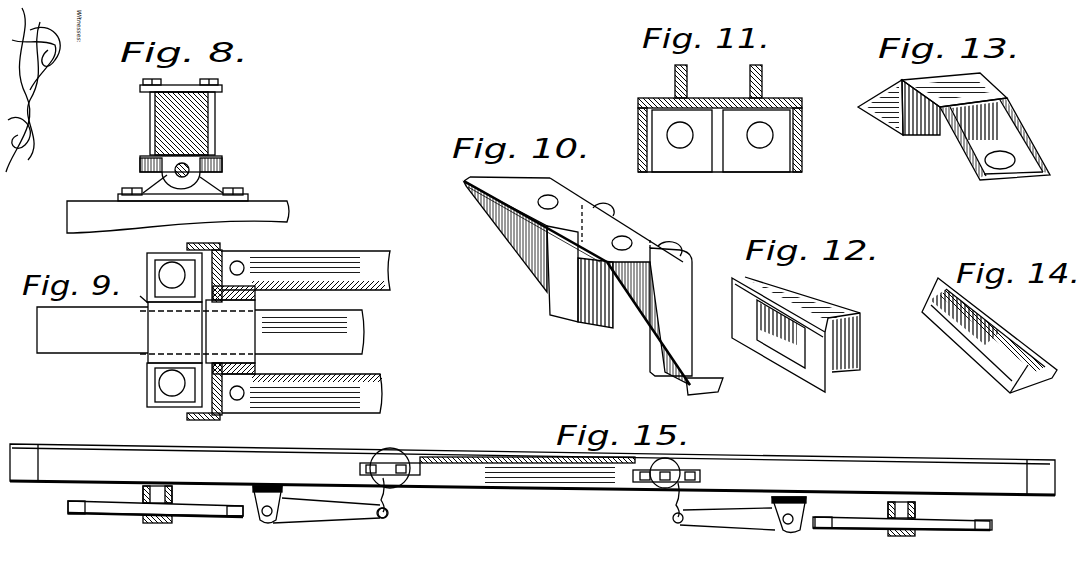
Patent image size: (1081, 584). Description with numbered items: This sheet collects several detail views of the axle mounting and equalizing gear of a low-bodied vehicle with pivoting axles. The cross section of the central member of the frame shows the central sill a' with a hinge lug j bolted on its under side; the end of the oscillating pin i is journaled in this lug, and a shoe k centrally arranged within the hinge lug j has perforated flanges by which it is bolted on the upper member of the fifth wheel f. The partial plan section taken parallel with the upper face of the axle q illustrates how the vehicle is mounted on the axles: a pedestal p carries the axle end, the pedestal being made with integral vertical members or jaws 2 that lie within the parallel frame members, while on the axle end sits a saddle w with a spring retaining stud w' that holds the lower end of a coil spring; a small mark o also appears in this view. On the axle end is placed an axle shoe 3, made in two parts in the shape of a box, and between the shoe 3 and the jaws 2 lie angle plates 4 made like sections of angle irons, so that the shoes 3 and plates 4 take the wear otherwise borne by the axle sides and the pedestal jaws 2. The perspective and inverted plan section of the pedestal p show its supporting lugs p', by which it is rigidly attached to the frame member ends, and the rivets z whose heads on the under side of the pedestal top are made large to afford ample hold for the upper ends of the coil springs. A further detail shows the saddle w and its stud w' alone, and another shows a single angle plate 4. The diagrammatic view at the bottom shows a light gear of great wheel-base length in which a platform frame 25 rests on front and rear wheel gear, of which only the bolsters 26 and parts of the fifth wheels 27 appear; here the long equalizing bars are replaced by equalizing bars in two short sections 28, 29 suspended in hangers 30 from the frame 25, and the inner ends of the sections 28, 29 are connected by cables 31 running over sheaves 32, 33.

In FIG. 8, the central sill a' is at (191, 125).
In FIG. 9, the central sill a' is at (316, 393).
In FIG. 8, the hinge lugs j is at (219, 164).
In FIG. 8, the oscillating pin i is at (166, 173).
In FIG. 8, the shoes k is at (201, 183).
In FIG. 8, the fifth wheel f is at (165, 219).
In FIG. 9, the axle q is at (92, 344).
In FIG. 9, the spring retaining studs w' is at (174, 336).
In FIG. 13, the spring retaining studs w' is at (996, 182).
In FIG. 9, the saddles w is at (175, 332).
In FIG. 13, the saddles w is at (954, 126).
In FIG. 9, the pin o is at (138, 292).
In FIG. 9, the axle shoes 3 is at (250, 352).
In FIG. 12, the axle shoes 3 is at (809, 334).
In FIG. 9, the angle plates 4 is at (231, 300).
In FIG. 14, the angle plates 4 is at (981, 335).
In FIG. 9, the pedestals p is at (206, 333).
In FIG. 10, the pedestals p is at (578, 271).
In FIG. 11, the pedestals p is at (711, 124).
In FIG. 9, the jaws 2 is at (267, 291).
In FIG. 10, the jaws 2 is at (608, 211).
In FIG. 11, the jaws 2 is at (718, 81).
In FIG. 9, the rail a is at (314, 270).
In FIG. 10, the rivets z is at (556, 199).
In FIG. 11, the rivets z is at (683, 140).
In FIG. 10, the supporting-lugs p' is at (704, 394).
In FIG. 15, the platform frame 25 is at (532, 469).
In FIG. 15, the cables 31 is at (488, 458).
In FIG. 15, the sheave 32 is at (390, 455).
In FIG. 15, the sheave 33 is at (668, 460).
In FIG. 15, the fifth wheels 27 is at (537, 516).
In FIG. 15, the bolsters 26 is at (529, 520).
In FIG. 15, the hangers 30 is at (272, 525).
In FIG. 15, the equalizing bar section 28 is at (330, 522).
In FIG. 15, the equalizing bar section 29 is at (726, 525).